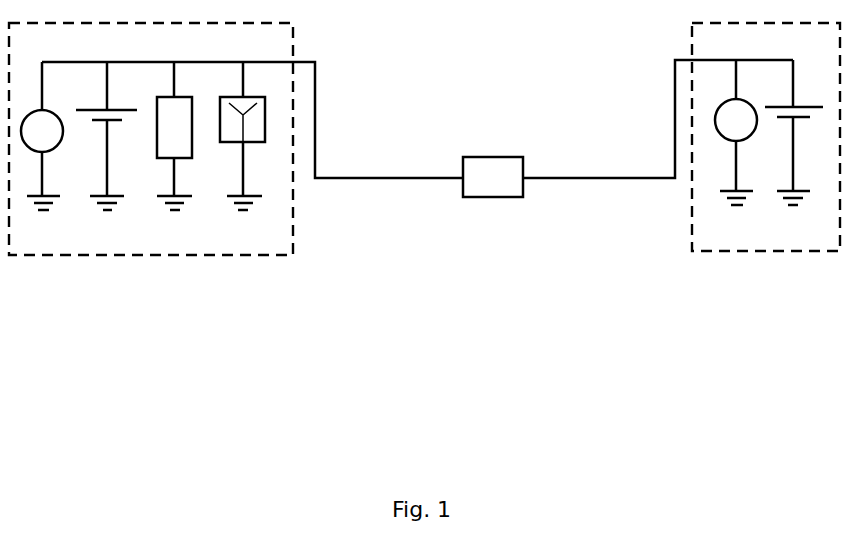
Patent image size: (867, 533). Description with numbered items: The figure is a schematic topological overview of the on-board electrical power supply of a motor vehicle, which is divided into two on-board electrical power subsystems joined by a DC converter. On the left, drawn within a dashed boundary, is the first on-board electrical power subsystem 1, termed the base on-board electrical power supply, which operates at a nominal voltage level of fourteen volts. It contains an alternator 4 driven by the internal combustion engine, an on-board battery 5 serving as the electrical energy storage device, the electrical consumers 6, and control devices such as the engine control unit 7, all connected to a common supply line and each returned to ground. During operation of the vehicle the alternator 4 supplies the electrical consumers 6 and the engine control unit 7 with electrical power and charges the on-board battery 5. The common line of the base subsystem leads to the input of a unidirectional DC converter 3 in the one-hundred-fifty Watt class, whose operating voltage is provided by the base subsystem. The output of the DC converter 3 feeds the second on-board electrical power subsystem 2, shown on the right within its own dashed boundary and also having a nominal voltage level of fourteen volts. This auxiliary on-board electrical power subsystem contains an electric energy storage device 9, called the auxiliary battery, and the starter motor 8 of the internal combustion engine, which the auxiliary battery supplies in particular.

The first on-board electrical power subsystem 1 is at (151, 139).
The second on-board electrical power subsystem 2 is at (766, 137).
The unidirectional DC converter 3 is at (493, 177).
The alternator 4 is at (42, 136).
The on-board battery 5 is at (137, 113).
The electrical consumers 6 is at (174, 136).
The engine control unit 7 is at (228, 145).
The starter motor 8 is at (736, 132).
The electric energy storage device 9 is at (823, 110).